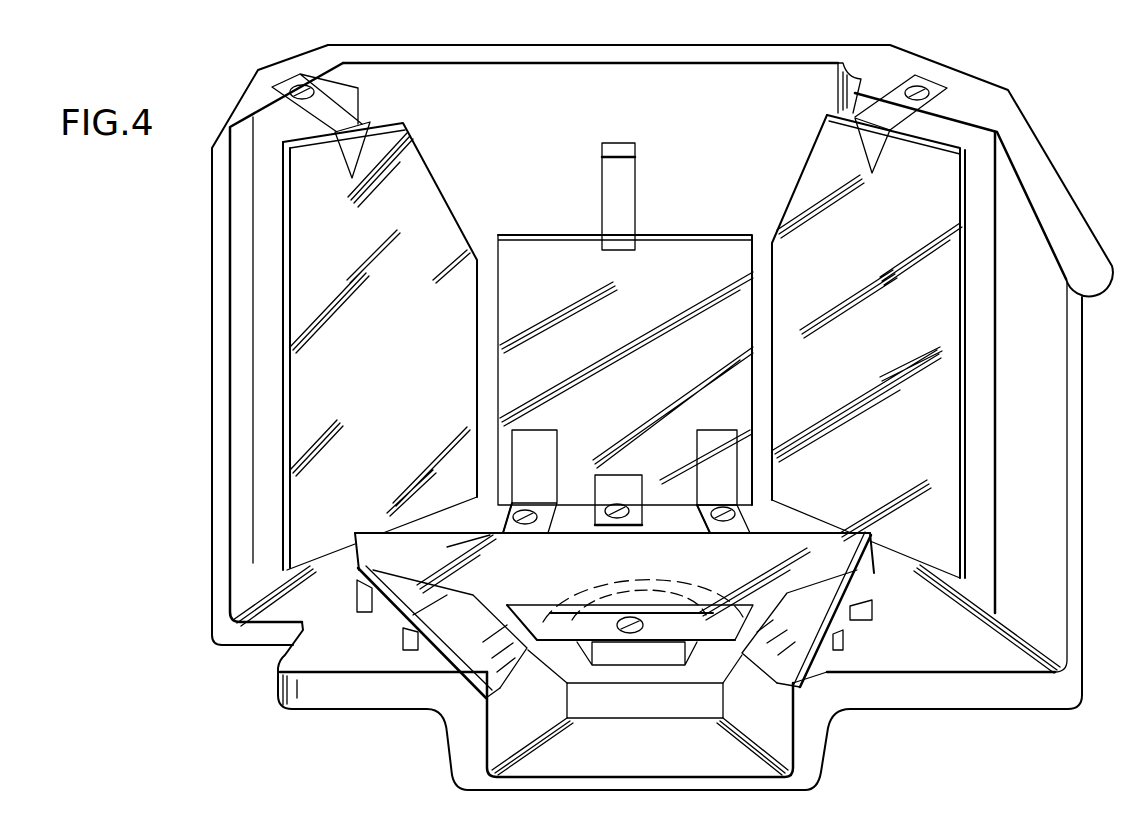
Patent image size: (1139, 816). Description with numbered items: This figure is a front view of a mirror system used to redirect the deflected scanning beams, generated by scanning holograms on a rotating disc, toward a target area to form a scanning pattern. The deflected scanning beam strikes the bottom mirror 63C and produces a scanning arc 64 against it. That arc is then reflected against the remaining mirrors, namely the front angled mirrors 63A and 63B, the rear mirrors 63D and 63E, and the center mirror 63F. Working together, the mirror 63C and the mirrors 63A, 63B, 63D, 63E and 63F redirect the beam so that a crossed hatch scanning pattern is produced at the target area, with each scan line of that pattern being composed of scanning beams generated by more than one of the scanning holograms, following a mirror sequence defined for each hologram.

The mirror 63A is at (862, 582).
The mirror 63B is at (400, 613).
The mirror 63C is at (373, 552).
The mirror 63D is at (815, 176).
The mirror 63E is at (422, 188).
The mirror 63F is at (553, 253).
The scanning arc 64 is at (593, 584).